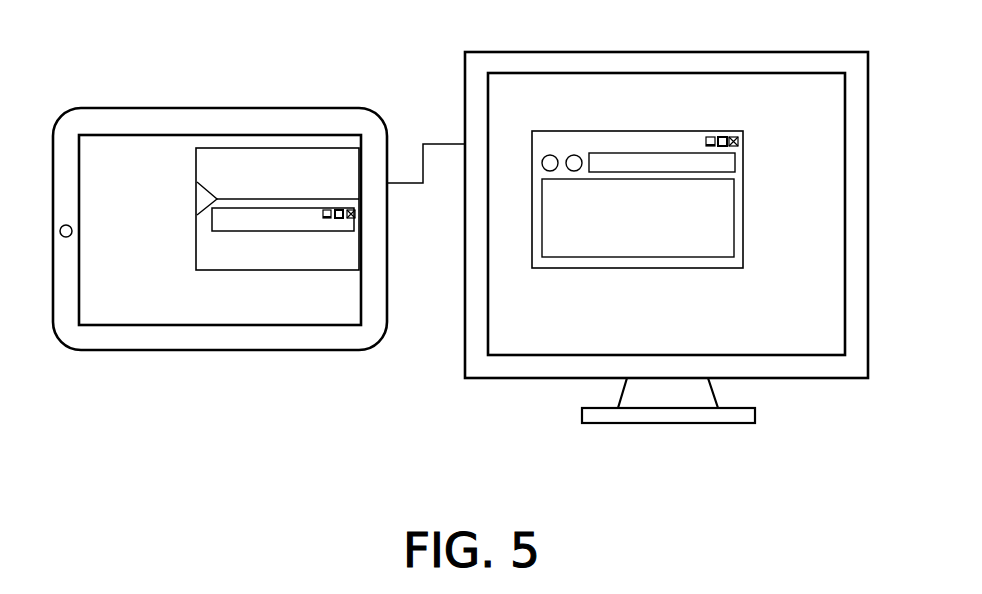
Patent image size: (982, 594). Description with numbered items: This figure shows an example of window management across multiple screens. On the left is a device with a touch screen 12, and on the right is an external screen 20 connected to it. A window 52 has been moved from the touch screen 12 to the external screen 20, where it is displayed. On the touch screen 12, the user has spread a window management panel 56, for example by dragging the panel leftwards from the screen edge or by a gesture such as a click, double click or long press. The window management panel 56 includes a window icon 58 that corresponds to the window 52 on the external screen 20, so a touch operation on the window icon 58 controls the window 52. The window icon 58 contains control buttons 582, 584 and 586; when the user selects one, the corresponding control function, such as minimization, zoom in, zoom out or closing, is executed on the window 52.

The touch screen 12 is at (135, 325).
The external screen 20 is at (508, 378).
The window 52 is at (607, 130).
The window management panel 56 is at (240, 148).
The window icon 58 is at (238, 231).
The control button 582 is at (327, 231).
The control button 584 is at (338, 231).
The control button 586 is at (349, 231).